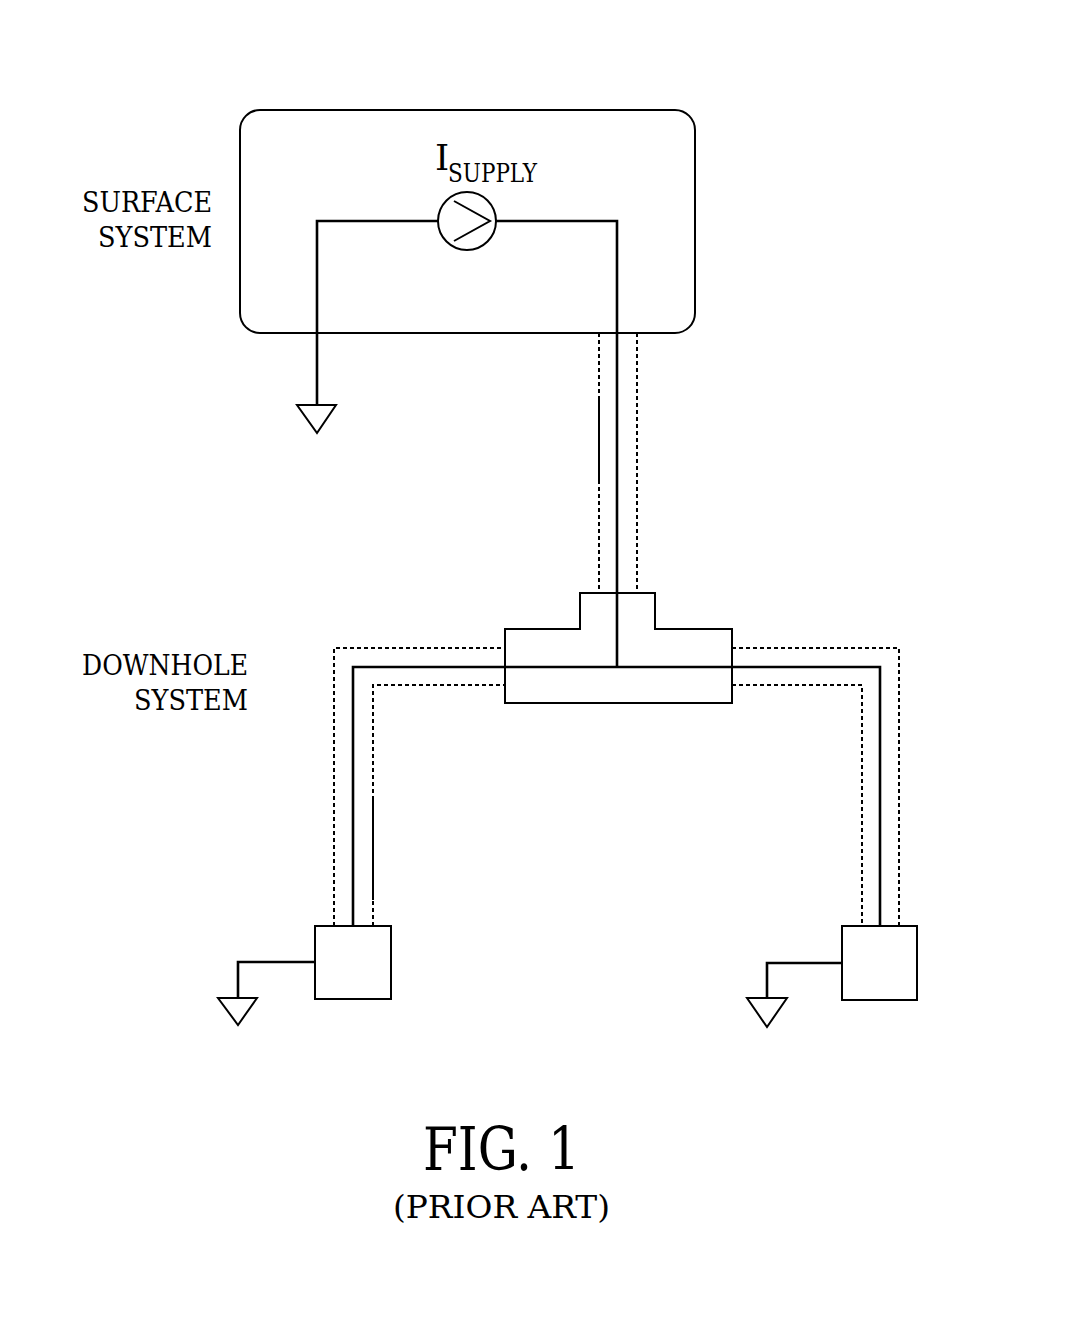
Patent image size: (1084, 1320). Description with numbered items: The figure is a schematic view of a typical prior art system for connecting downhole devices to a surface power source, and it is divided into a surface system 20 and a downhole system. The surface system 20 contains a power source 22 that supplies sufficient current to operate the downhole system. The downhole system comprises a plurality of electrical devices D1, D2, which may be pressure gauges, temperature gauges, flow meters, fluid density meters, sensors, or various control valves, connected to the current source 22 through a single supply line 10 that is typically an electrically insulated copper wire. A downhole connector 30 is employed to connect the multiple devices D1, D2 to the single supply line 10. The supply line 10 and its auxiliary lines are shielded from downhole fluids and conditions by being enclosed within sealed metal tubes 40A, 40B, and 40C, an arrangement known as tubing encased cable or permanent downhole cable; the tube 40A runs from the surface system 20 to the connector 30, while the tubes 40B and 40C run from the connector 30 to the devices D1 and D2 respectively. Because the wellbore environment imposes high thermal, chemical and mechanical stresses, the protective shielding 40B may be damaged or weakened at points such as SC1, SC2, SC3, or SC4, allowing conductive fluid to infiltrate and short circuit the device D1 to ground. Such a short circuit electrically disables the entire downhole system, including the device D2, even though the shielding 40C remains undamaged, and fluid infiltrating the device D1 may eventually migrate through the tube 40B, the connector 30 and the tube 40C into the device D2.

The supply line 10 is at (624, 486).
The surface system 20 is at (698, 150).
The power source 22 is at (438, 211).
The downhole connector 30 is at (660, 612).
The sealed metal tube 40A is at (596, 537).
The sealed metal tube 40B is at (376, 852).
The sealed metal tube 40C is at (859, 853).
The electrical device D1 is at (304, 975).
The electrical device D2 is at (832, 976).
The short circuit point SC1 is at (518, 648).
The short circuit point SC2 is at (350, 755).
The short circuit point SC3 is at (350, 925).
The short circuit point SC4 is at (336, 988).